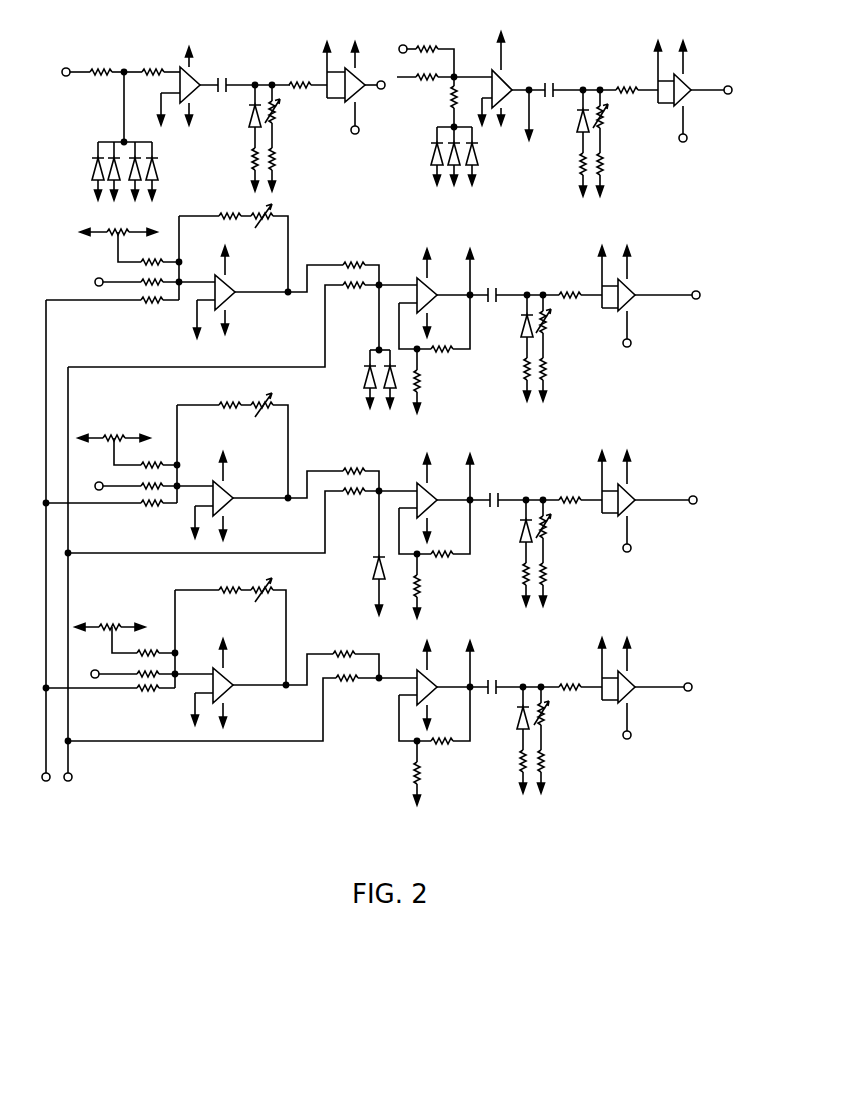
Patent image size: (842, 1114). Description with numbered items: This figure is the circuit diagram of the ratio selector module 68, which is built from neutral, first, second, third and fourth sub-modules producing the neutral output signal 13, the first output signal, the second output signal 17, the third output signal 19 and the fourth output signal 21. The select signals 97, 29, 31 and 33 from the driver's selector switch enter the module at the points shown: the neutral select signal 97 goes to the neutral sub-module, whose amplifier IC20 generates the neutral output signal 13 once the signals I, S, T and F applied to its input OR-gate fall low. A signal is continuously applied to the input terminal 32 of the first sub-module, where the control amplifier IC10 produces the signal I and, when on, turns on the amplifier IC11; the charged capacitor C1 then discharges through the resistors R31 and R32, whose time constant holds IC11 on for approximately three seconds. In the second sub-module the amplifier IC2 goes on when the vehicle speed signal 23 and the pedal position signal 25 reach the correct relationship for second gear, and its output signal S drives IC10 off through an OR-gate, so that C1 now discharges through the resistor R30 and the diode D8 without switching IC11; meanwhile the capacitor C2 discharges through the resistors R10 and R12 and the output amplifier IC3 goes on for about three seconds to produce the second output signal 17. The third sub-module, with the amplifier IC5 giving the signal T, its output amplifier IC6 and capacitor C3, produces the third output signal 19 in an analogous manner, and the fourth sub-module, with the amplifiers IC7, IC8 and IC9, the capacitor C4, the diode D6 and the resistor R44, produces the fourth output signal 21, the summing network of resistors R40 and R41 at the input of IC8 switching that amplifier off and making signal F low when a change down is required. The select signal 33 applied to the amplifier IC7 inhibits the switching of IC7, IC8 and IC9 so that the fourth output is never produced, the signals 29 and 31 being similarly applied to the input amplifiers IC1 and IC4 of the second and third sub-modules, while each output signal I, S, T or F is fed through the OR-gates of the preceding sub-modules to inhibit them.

The ratio selector module 68 is at (389, 498).
The neutral select signal 97 is at (227, 60).
The input terminal of the first sub-module 32 is at (413, 75).
The neutral output signal 13 is at (380, 100).
The first select signal 29 is at (118, 273).
The second select signal 31 is at (108, 487).
The third select signal 33 is at (104, 672).
The second output signal 17 is at (682, 296).
The third output signal 19 is at (681, 501).
The fourth output signal 21 is at (678, 702).
The vehicle speed signal 23 is at (52, 556).
The pedal position signal 25 is at (83, 578).
The amplifier of the neutral sub-module IC20 is at (179, 69).
The control amplifier of the first sub-module IC10 is at (530, 78).
The output amplifier of the first sub-module IC11 is at (698, 91).
The second input amplifier IC1 is at (232, 292).
The amplifier of the second sub-module IC2 is at (426, 291).
The output amplifier of the second sub-module IC3 is at (632, 292).
The third input amplifier IC4 is at (227, 496).
The amplifier of the third sub-module IC5 is at (418, 490).
The third output buffer amplifier IC6 is at (632, 501).
The amplifier of the fourth sub-module IC7 is at (227, 683).
The amplifier of the fourth sub-module IC8 is at (436, 723).
The output amplifier of the fourth sub-module IC9 is at (631, 688).
The capacitor of the first sub-module C1 is at (576, 78).
The capacitor of the second sub-module C2 is at (499, 282).
The coupling capacitor C3 is at (502, 488).
The coupling capacitor C4 is at (497, 676).
The diode D8 is at (569, 114).
The diode D6 is at (503, 708).
The resistor R30 is at (565, 164).
The resistor R31 is at (621, 114).
The resistor R32 is at (624, 164).
The resistor R10 is at (564, 316).
The resistor R12 is at (566, 369).
The summing network resistor R40 is at (345, 642).
The summing network resistor R41 is at (353, 692).
The resistor R44 is at (502, 761).